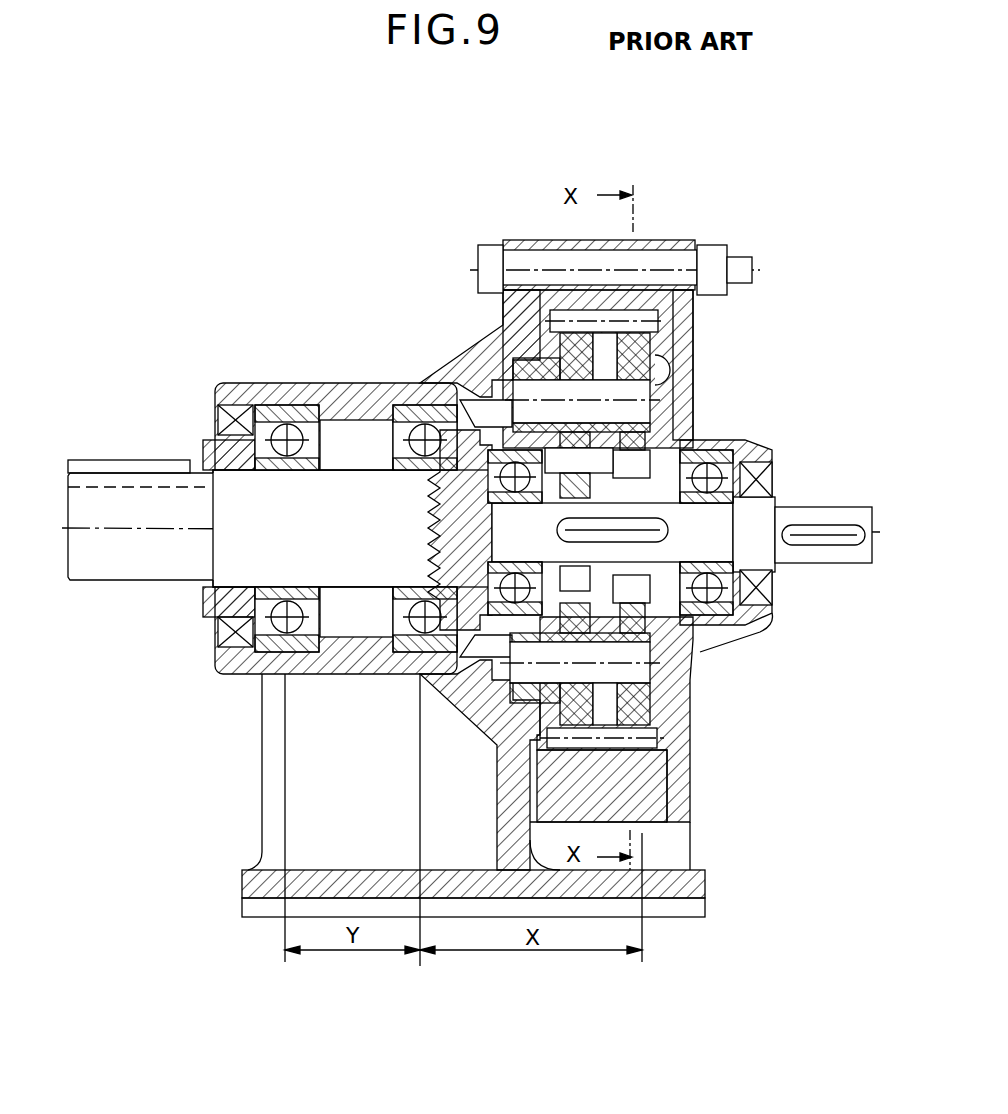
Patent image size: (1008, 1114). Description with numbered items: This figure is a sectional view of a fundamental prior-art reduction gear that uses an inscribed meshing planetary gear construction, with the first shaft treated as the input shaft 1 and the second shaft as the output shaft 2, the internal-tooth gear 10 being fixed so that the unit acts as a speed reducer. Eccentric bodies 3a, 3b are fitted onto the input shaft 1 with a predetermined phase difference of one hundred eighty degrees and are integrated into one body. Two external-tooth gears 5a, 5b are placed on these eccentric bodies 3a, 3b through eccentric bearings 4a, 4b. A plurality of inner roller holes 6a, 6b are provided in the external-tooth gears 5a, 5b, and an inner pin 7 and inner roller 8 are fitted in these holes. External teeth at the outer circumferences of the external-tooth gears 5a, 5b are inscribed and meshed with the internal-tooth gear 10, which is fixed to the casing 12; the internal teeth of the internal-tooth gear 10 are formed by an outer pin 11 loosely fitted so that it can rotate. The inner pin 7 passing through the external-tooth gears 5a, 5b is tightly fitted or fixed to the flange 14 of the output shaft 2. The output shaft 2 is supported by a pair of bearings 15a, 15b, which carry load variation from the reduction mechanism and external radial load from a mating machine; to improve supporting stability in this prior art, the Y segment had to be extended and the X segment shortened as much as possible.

The input shaft 1 is at (820, 556).
The output shaft 2 is at (92, 567).
The eccentric body 3a is at (748, 458).
The eccentric body 3b is at (377, 675).
The eccentric bearing 4a is at (705, 452).
The eccentric bearing 4b is at (490, 718).
The external-tooth gear 5a is at (657, 367).
The external-tooth gear 5b is at (490, 768).
The inner roller hole 6a is at (633, 372).
The inner roller hole 6b is at (395, 395).
The inner pin 7 is at (630, 672).
The inner roller 8 is at (692, 732).
The internal-tooth gear 10 is at (650, 240).
The outer pin 11 is at (570, 320).
The casing 12 is at (690, 328).
The flange 14 is at (525, 365).
The bearing 15a is at (307, 385).
The bearing 15b is at (225, 442).